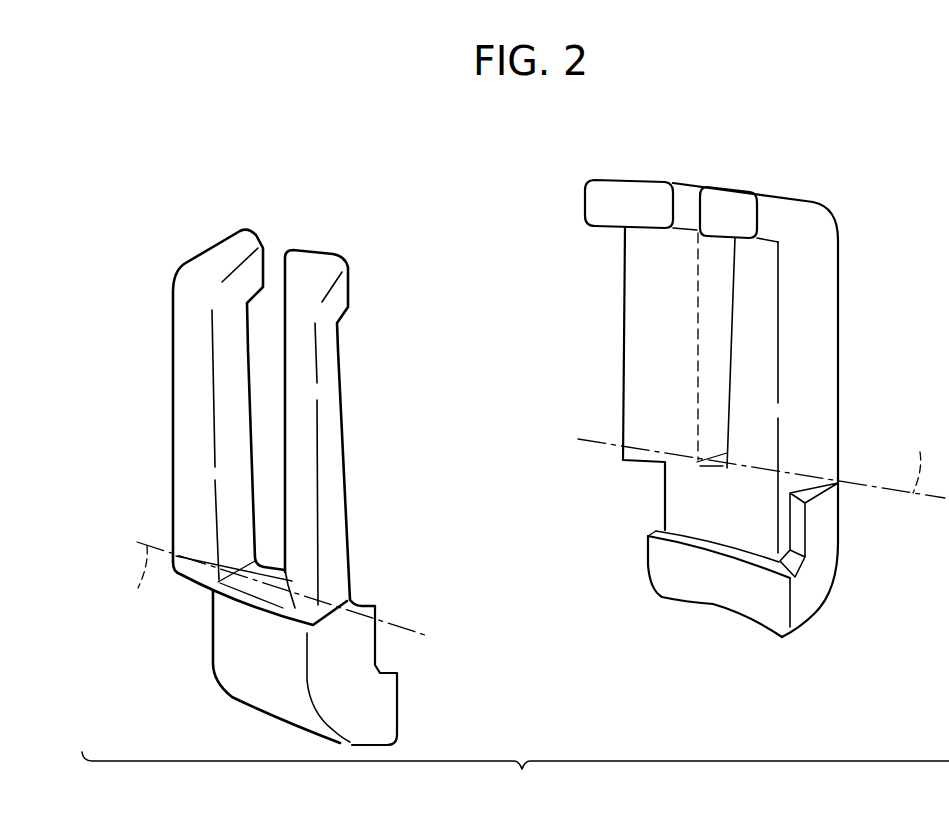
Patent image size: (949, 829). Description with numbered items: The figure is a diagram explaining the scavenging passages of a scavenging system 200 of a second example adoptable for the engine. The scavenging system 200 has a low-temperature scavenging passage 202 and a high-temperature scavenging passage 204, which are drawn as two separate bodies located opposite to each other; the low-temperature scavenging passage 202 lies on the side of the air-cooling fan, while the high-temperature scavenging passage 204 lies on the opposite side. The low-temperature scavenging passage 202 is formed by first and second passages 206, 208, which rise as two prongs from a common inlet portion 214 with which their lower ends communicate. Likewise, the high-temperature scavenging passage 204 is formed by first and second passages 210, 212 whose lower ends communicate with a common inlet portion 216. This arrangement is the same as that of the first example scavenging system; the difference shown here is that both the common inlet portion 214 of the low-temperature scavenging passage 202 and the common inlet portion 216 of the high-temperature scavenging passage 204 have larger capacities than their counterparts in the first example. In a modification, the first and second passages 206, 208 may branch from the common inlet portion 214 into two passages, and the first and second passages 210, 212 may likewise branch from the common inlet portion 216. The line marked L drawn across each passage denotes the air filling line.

The scavenging system 200 is at (515, 779).
The low-temperature scavenging passage 202 is at (170, 209).
The high-temperature scavenging passage 204 is at (852, 176).
The first passage 206 is at (332, 478).
The second passage 208 is at (180, 400).
The first passage 210 is at (825, 307).
The second passage 212 is at (638, 287).
The common inlet portion 214 is at (347, 652).
The common inlet portion 216 is at (783, 533).